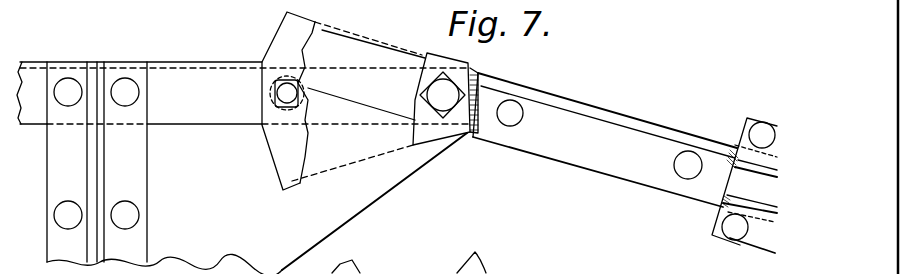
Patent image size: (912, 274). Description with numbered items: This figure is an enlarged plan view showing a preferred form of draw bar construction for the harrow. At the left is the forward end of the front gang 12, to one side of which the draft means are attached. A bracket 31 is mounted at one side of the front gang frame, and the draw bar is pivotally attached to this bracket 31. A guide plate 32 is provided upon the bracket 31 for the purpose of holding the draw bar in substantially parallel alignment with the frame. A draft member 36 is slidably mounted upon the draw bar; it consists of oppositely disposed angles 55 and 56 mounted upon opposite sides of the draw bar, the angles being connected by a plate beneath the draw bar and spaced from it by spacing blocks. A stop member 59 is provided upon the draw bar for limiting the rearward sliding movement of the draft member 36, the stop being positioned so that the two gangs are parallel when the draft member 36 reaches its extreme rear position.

The front gang 12 is at (147, 236).
The bracket 31 is at (371, 198).
The guide plate 32 is at (433, 135).
The draft member 36 is at (701, 228).
The angle 55 is at (752, 118).
The angle 56 is at (755, 242).
The stop member 59 is at (621, 104).